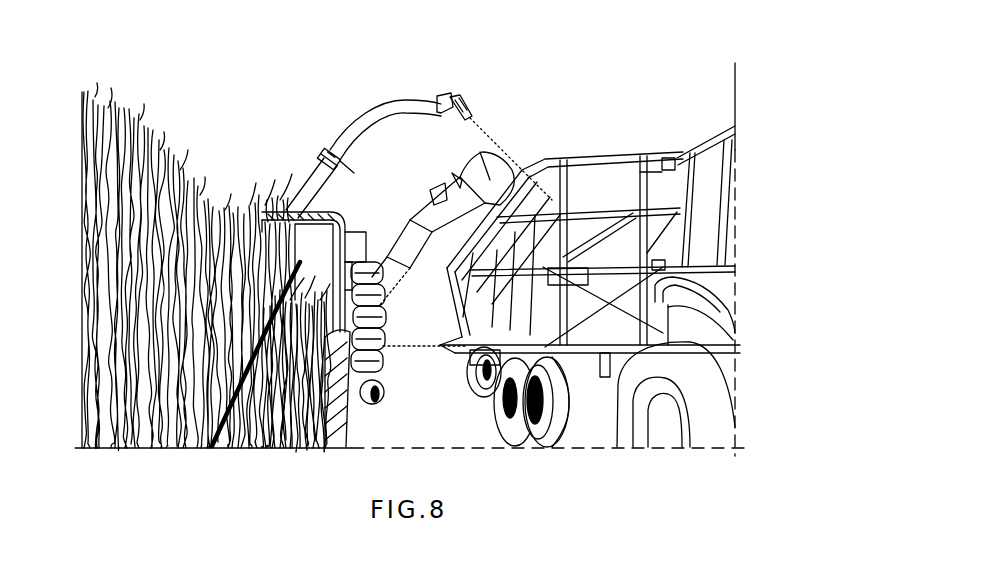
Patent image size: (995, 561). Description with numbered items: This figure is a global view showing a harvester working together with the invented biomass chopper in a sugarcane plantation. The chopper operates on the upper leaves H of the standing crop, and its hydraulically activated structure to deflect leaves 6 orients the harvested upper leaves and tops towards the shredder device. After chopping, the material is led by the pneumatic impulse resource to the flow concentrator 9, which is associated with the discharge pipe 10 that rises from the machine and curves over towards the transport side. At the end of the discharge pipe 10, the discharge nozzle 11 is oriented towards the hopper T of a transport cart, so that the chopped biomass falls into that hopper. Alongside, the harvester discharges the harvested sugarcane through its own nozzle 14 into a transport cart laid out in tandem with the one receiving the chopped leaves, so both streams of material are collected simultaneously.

The upper leaves H is at (183, 134).
The structure to deflect leaves 6 is at (233, 450).
The flow concentrator 9 is at (290, 192).
The discharge pipe 10 is at (363, 115).
The discharge nozzle 11 is at (466, 105).
The nozzle 14 is at (507, 172).
The hopper T is at (636, 147).